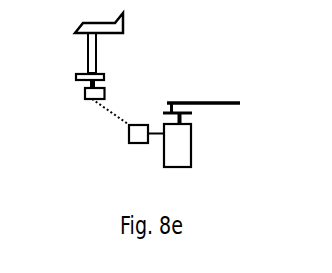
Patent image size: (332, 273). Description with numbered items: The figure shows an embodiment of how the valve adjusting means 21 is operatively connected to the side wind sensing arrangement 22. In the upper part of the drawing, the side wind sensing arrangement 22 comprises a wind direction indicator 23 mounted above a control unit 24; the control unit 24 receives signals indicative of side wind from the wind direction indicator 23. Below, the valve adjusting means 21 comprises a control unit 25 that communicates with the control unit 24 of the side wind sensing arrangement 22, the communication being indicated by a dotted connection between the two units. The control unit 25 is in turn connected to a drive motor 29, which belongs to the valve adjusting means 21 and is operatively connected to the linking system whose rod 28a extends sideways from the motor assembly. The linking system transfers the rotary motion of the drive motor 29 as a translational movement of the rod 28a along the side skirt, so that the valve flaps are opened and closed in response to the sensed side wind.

The valve adjusting means 21 is at (89, 162).
The side wind sensing arrangement 22 is at (140, 39).
The wind direction indicator 23 is at (87, 53).
The control unit 24 is at (89, 94).
The control unit 25 is at (137, 133).
The rod 28a is at (213, 101).
The drive motor 29 is at (182, 142).